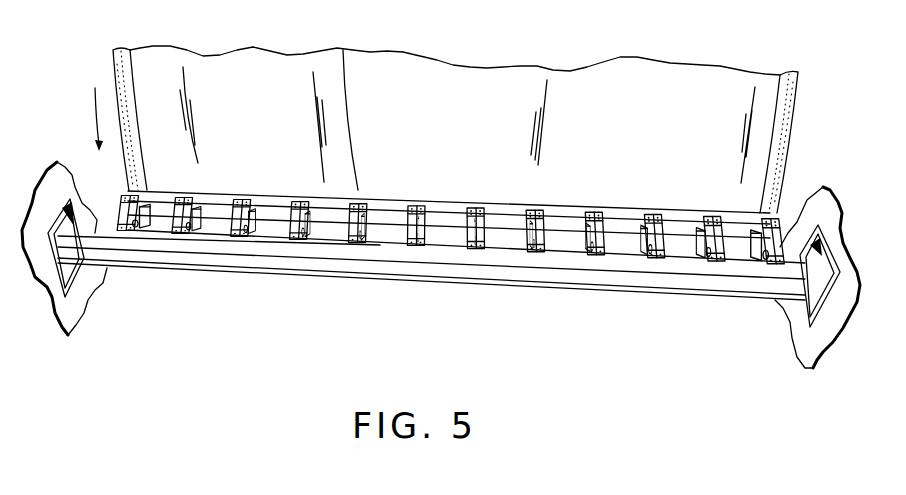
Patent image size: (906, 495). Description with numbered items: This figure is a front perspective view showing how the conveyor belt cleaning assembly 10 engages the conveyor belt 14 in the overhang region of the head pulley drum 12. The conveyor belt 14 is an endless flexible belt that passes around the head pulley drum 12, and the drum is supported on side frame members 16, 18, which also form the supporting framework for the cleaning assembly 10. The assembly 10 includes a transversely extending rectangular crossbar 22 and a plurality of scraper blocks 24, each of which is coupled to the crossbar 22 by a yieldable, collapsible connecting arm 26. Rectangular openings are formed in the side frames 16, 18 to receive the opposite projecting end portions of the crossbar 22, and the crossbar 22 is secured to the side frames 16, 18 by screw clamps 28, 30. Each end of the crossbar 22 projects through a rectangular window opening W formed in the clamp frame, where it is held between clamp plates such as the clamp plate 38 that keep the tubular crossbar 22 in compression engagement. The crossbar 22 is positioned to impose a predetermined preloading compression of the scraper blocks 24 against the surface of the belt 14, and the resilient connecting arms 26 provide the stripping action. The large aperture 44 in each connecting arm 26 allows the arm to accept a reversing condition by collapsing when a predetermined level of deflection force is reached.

The conveyor belt cleaning assembly 10 is at (463, 300).
The head pulley drum 12 is at (120, 68).
The conveyor belt 14 is at (274, 59).
The side frame member 16 is at (78, 321).
The side frame member 18 is at (806, 360).
The rectangular crossbar 22 is at (638, 282).
The scraper blocks 24 is at (276, 196).
The connecting arm 26 is at (231, 206).
The screw clamp 28 is at (80, 278).
The screw clamp 30 is at (845, 197).
The clamp plate 38 is at (96, 266).
The large aperture 44 is at (258, 226).
The rectangular window opening W is at (74, 210).